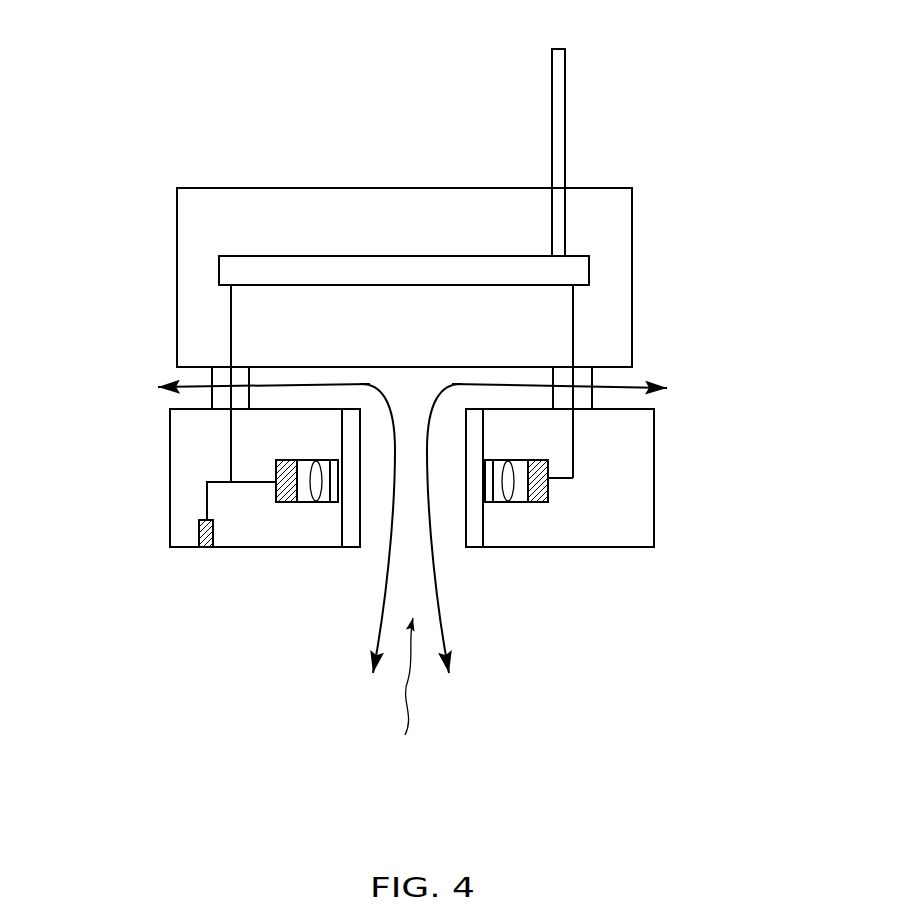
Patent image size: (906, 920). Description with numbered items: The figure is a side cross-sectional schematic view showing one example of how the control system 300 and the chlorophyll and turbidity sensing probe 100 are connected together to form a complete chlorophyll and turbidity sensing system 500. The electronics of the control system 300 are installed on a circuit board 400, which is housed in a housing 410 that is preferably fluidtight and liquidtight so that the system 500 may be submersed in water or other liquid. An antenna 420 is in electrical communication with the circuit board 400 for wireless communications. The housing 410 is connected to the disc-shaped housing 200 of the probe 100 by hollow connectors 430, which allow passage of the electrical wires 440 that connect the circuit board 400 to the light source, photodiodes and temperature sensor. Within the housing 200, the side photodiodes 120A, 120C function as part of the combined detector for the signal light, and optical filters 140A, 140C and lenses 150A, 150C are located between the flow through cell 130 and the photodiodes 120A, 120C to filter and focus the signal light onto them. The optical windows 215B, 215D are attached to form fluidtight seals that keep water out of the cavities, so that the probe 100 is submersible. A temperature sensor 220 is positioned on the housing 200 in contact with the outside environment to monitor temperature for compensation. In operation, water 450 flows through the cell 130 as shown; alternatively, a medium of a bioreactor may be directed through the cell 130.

The chlorophyll and turbidity sensing system 500 is at (420, 37).
The housing 410 is at (245, 198).
The antenna 420 is at (565, 108).
The circuit board 400 is at (347, 258).
The control system 300 is at (518, 243).
The electrical wires 440 is at (231, 320).
The hollow connectors 430 is at (210, 375).
The housing 200 is at (183, 457).
The optical window 215B is at (352, 548).
The optical window 215D is at (477, 537).
The temperature sensor 220 is at (198, 536).
The photodiode 120A is at (285, 503).
The photodiode 120C is at (540, 502).
The optical filter 140A is at (330, 503).
The optical filter 140C is at (490, 503).
The lens 150A is at (316, 461).
The lens 150C is at (508, 461).
The water 450 is at (380, 630).
The flow through cell 130 is at (408, 693).
The chlorophyll and turbidity sensing probe 100 is at (681, 520).